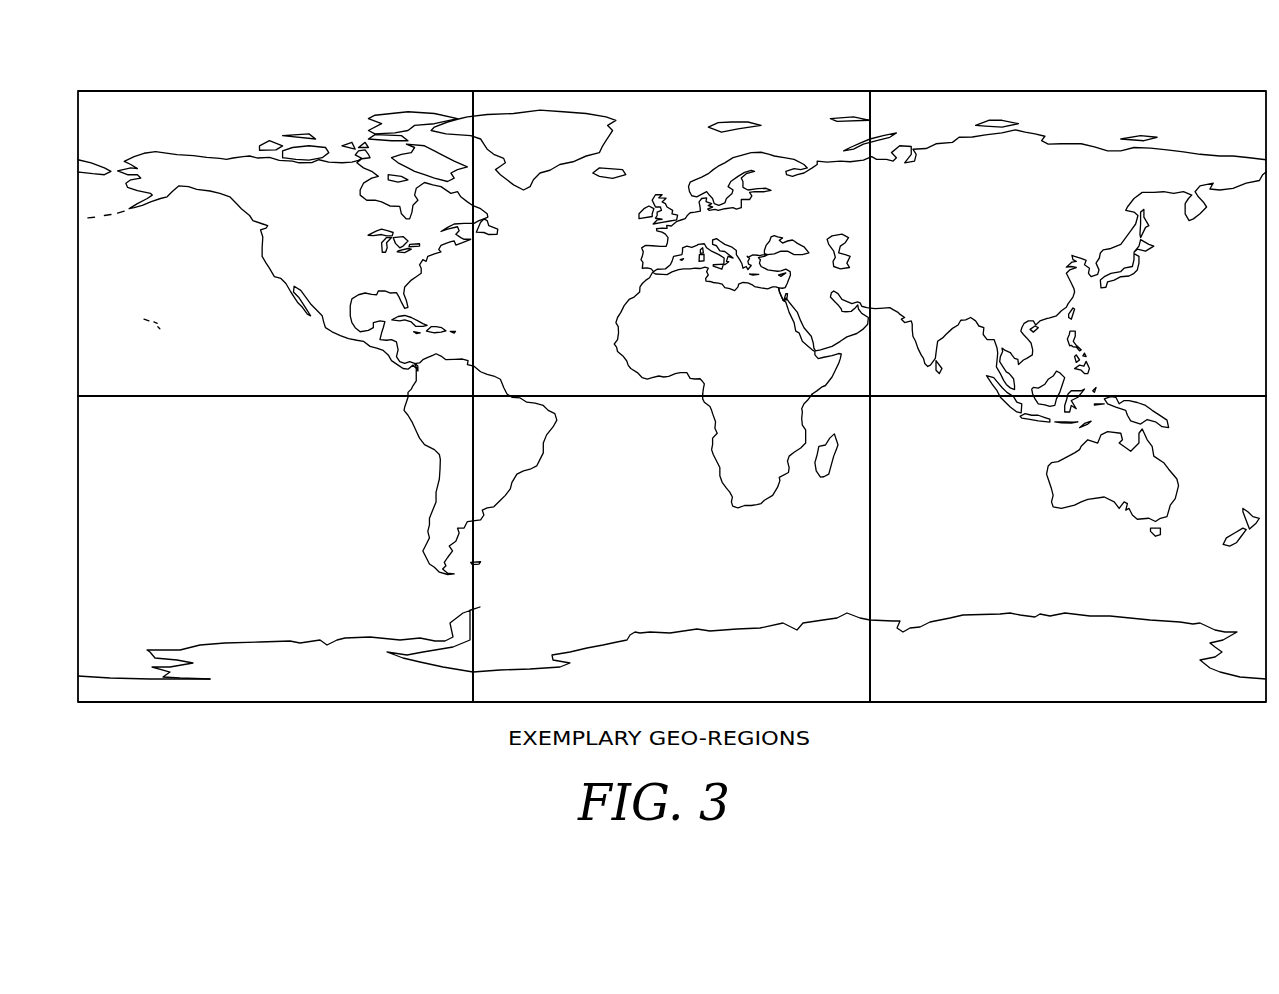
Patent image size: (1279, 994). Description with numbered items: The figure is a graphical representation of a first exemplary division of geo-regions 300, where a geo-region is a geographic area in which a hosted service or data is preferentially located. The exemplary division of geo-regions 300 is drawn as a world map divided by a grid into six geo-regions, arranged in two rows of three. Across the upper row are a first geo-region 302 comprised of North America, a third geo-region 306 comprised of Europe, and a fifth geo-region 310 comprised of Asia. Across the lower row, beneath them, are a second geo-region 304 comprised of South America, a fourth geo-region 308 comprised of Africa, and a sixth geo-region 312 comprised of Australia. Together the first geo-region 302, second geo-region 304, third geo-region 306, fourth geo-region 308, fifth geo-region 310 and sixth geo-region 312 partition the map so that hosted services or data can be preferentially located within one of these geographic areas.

The exemplary division of geo-regions 300 is at (242, 52).
The first geo-region 302 is at (275, 243).
The second geo-region 304 is at (275, 549).
The third geo-region 306 is at (671, 243).
The fourth geo-region 308 is at (671, 549).
The fifth geo-region 310 is at (1068, 243).
The sixth geo-region 312 is at (1068, 549).